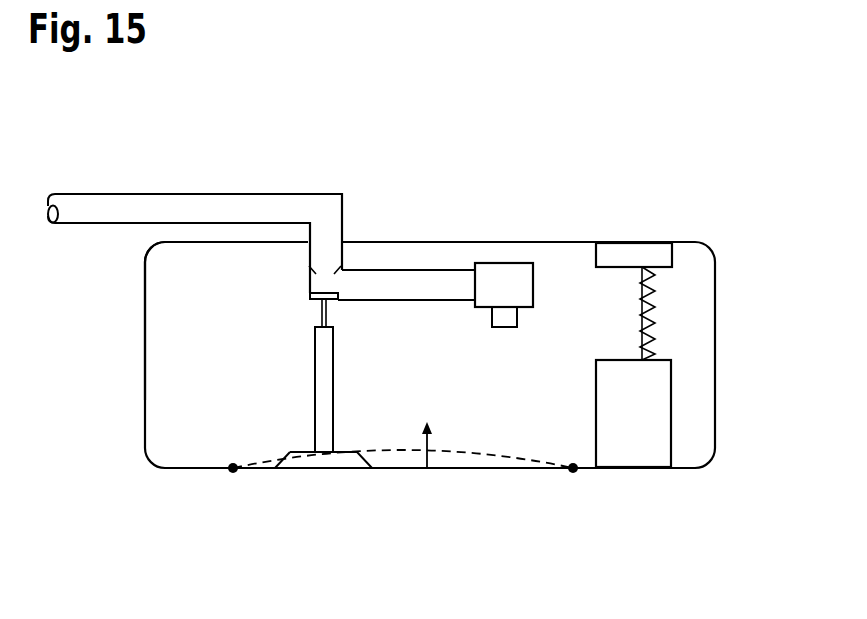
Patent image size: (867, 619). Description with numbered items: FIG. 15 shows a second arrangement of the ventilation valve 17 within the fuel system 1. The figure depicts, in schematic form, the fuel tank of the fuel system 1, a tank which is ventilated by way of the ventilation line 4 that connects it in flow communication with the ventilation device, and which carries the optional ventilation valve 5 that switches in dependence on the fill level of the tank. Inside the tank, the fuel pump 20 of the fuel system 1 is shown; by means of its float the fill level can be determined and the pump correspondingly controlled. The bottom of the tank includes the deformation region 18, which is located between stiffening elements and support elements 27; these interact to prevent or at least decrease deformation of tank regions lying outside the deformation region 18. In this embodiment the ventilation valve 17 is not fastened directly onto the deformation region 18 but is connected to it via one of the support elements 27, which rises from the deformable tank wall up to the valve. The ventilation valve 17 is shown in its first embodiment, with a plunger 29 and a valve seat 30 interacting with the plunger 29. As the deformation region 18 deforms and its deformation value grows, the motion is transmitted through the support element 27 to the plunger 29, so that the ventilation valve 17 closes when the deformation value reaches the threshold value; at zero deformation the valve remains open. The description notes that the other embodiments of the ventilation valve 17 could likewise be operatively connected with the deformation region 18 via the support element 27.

The fuel system 1 is at (458, 172).
The ventilation line 4 is at (251, 207).
The ventilation valve 5 is at (507, 272).
The ventilation valve 17 is at (369, 205).
The deformation region 18 is at (400, 470).
The fuel pump 20 is at (660, 417).
The support element 27 is at (323, 388).
The plunger 29 is at (310, 296).
The valve seat 30 is at (308, 271).